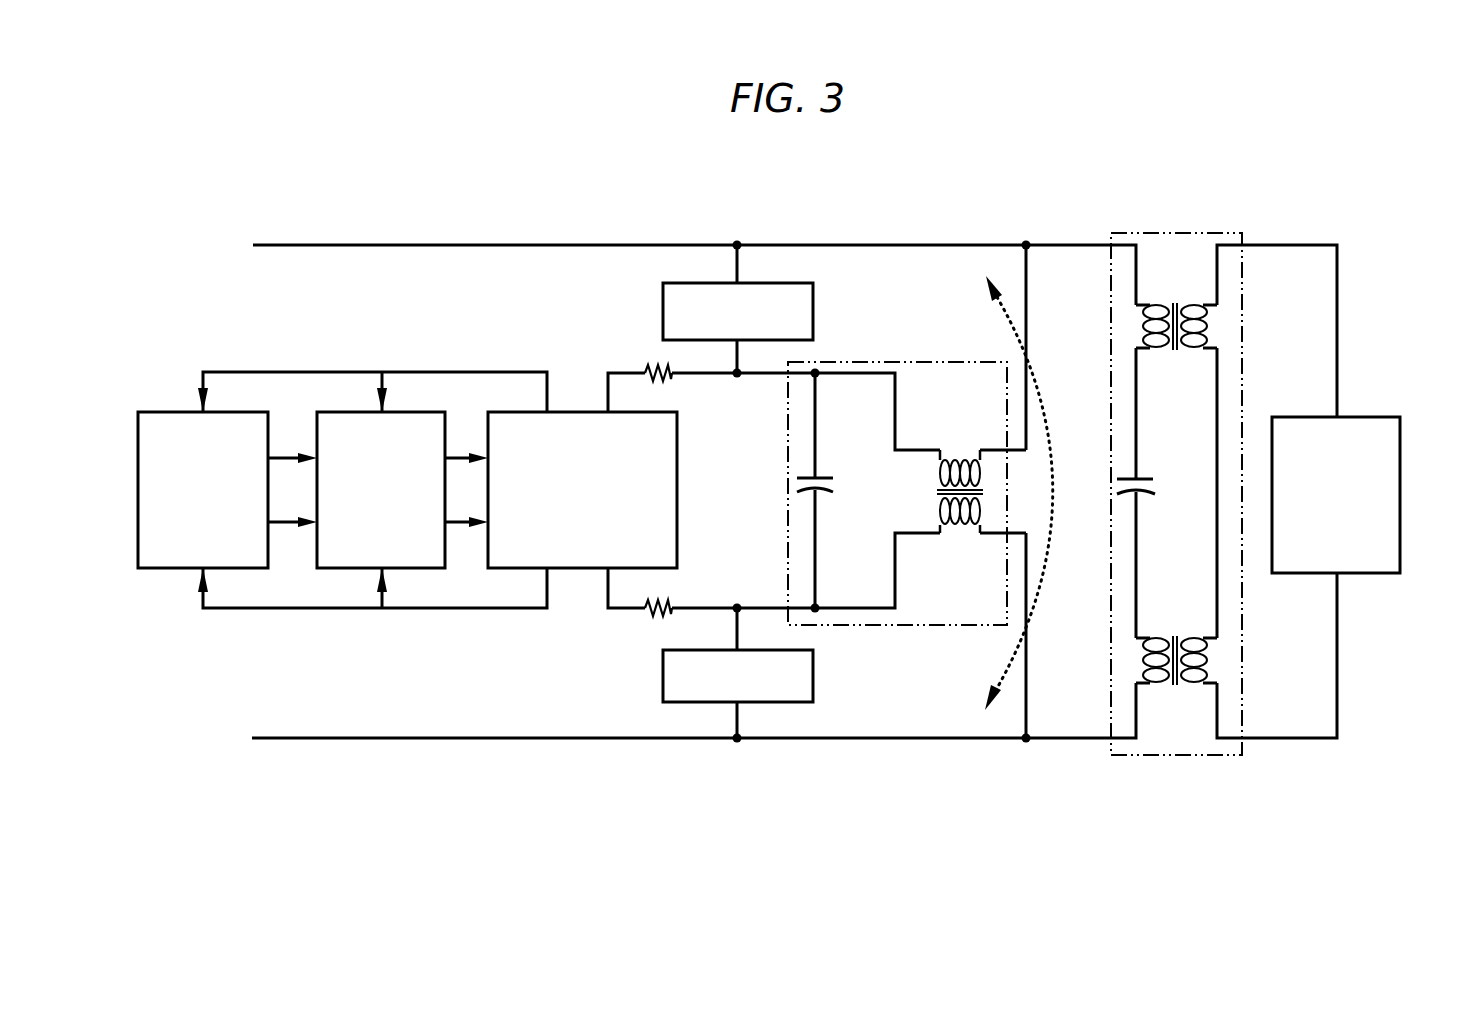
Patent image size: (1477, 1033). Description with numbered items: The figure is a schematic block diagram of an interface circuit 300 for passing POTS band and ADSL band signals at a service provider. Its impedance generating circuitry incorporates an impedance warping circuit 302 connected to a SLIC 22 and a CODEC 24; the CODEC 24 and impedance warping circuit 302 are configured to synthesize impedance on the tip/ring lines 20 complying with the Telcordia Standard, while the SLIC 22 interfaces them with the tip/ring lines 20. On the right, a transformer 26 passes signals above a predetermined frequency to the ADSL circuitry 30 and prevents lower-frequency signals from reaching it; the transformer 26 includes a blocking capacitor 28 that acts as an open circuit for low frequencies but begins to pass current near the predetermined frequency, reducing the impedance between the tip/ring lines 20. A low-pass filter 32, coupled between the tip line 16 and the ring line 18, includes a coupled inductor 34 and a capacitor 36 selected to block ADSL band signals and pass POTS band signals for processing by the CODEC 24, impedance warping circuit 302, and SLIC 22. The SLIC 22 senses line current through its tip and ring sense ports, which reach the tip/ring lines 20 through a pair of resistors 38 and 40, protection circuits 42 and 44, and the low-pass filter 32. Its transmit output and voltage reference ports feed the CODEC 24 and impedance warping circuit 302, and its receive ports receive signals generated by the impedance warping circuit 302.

The interface circuit 300 is at (417, 195).
The tip line 16 is at (277, 244).
The ring line 18 is at (280, 737).
The tip/ring lines 20 is at (1044, 404).
The SLIC 22 is at (574, 411).
The CODEC 24 is at (160, 411).
The transformer 26 is at (1176, 466).
The blocking capacitor 28 is at (1148, 478).
The ADSL circuitry 30 is at (1400, 497).
The low-pass filter 32 is at (897, 466).
The coupled inductor 34 is at (938, 518).
The capacitor 36 is at (828, 478).
The resistor 38 is at (647, 372).
The resistor 40 is at (648, 610).
The protection circuit 42 is at (815, 312).
The protection circuit 44 is at (815, 676).
The impedance warping circuit 302 is at (317, 422).